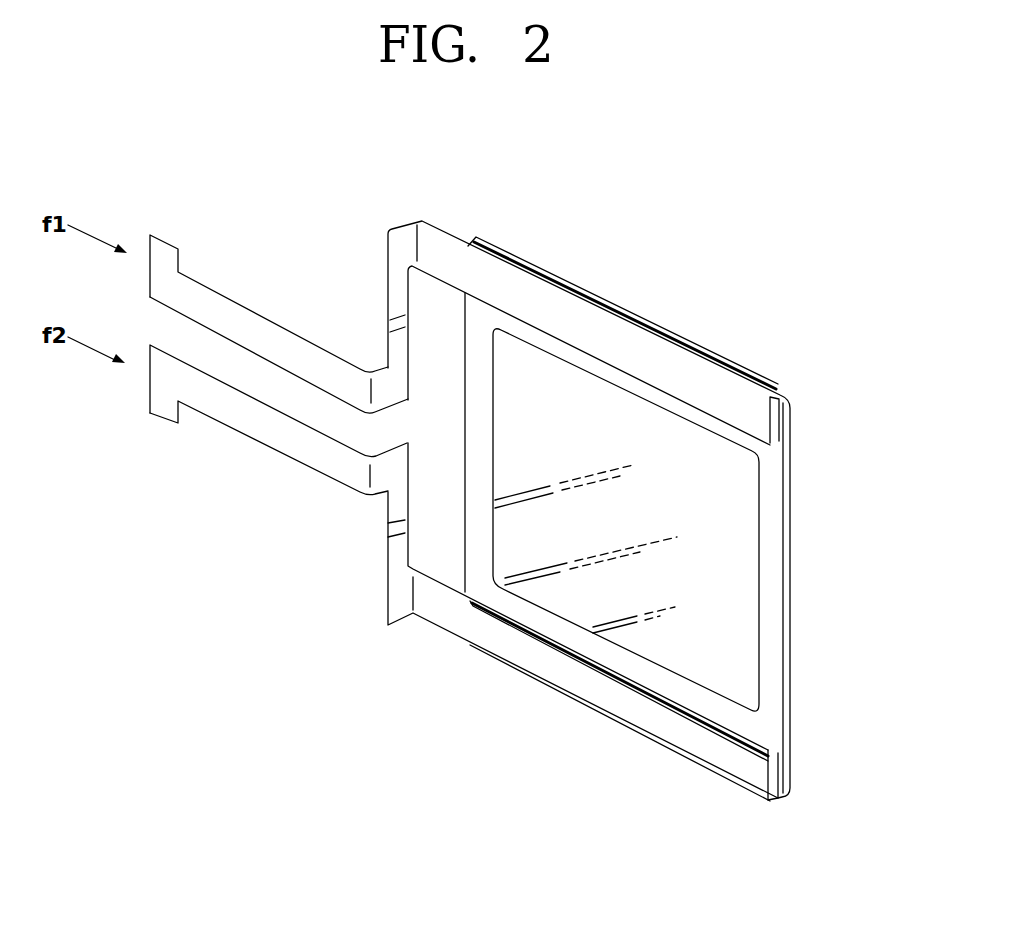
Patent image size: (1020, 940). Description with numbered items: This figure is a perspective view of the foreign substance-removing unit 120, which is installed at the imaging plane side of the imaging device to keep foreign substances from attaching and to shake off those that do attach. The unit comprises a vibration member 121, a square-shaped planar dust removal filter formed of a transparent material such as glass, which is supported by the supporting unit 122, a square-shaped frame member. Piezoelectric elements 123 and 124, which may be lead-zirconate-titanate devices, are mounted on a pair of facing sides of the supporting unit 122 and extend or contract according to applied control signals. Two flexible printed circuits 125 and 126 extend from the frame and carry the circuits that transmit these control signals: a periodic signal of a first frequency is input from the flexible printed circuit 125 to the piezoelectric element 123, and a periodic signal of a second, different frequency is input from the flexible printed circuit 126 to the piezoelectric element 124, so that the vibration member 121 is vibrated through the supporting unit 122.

The foreign substance-removing unit 120 is at (629, 275).
The vibration member 121 is at (738, 540).
The supporting unit 122 is at (777, 648).
The piezoelectric element 123 is at (785, 426).
The piezoelectric element 124 is at (777, 765).
The flexible printed circuit 125 is at (268, 320).
The flexible printed circuit 126 is at (268, 449).